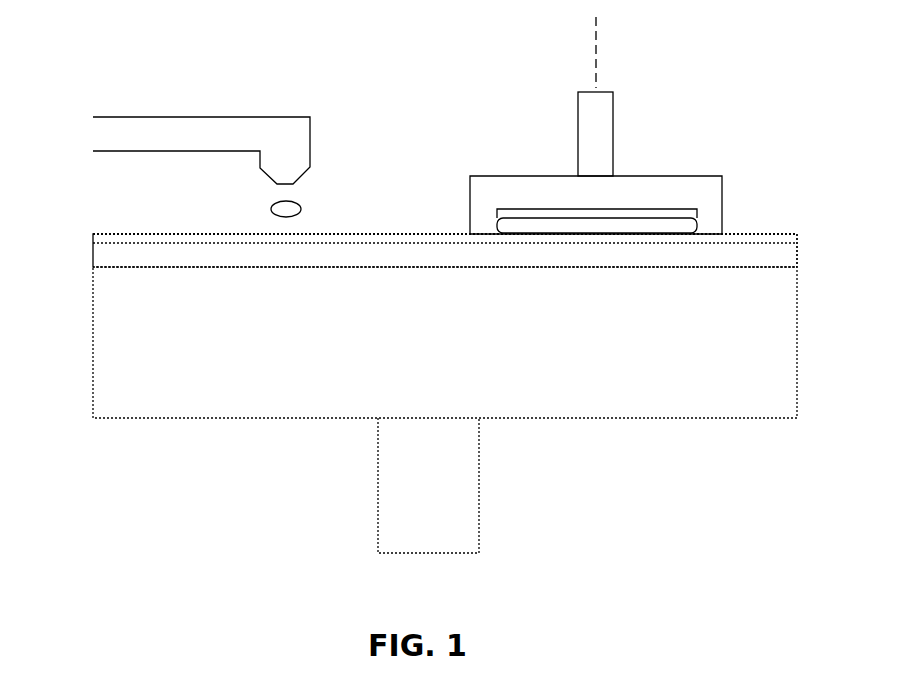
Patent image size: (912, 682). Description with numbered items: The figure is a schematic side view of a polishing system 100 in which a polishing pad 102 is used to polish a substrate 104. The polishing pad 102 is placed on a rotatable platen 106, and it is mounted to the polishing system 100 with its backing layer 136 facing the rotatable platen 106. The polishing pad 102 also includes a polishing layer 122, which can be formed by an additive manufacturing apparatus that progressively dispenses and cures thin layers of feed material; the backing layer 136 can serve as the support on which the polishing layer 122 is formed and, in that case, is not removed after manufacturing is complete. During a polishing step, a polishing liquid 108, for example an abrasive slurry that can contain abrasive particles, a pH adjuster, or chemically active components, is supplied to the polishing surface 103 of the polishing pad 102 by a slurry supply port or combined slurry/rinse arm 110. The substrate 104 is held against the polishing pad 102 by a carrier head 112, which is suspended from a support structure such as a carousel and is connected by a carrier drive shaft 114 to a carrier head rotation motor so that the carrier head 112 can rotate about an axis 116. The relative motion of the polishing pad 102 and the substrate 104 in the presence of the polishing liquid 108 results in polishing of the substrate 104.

The polishing system 100 is at (253, 83).
The polishing pad 102 is at (92, 234).
The polishing surface 103 is at (362, 234).
The substrate 104 is at (645, 218).
The rotatable platen 106 is at (797, 345).
The polishing liquid 108 is at (295, 203).
The slurry/rinse arm 110 is at (268, 117).
The carrier head 112 is at (678, 176).
The carrier drive shaft 114 is at (578, 137).
The axis 116 is at (595, 63).
The polishing layer 122 is at (797, 237).
The backing layer 136 is at (797, 248).